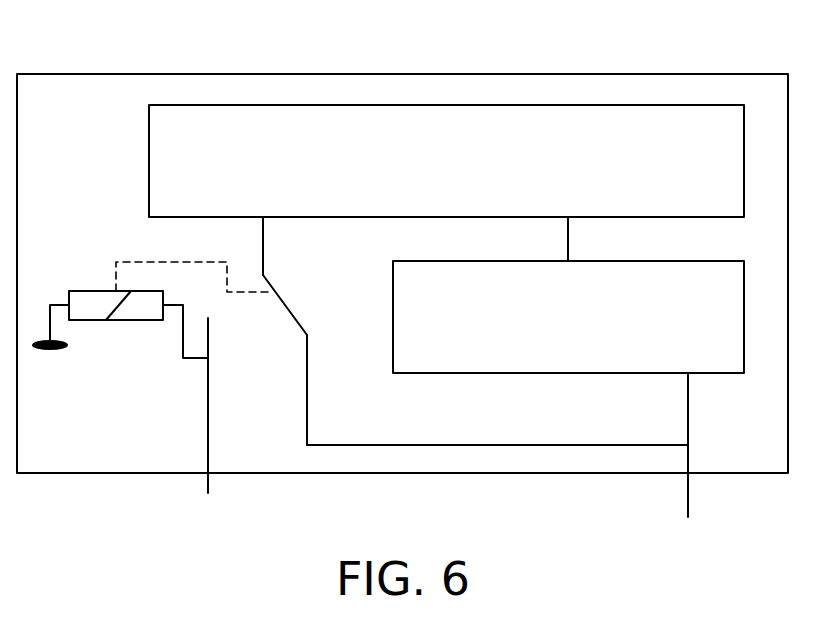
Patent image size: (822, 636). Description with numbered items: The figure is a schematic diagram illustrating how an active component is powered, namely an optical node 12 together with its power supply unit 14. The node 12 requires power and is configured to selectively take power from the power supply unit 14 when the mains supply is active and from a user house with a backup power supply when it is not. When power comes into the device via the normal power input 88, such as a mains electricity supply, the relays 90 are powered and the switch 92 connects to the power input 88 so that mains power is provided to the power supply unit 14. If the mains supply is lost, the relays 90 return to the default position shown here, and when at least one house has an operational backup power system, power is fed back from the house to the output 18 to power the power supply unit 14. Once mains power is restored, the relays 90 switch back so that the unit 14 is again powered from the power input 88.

The optical node 12 is at (525, 373).
The power supply unit 14 is at (468, 105).
The output 18 is at (690, 497).
The power input 88 is at (210, 485).
The relays 90 is at (100, 320).
The switch 92 is at (281, 300).